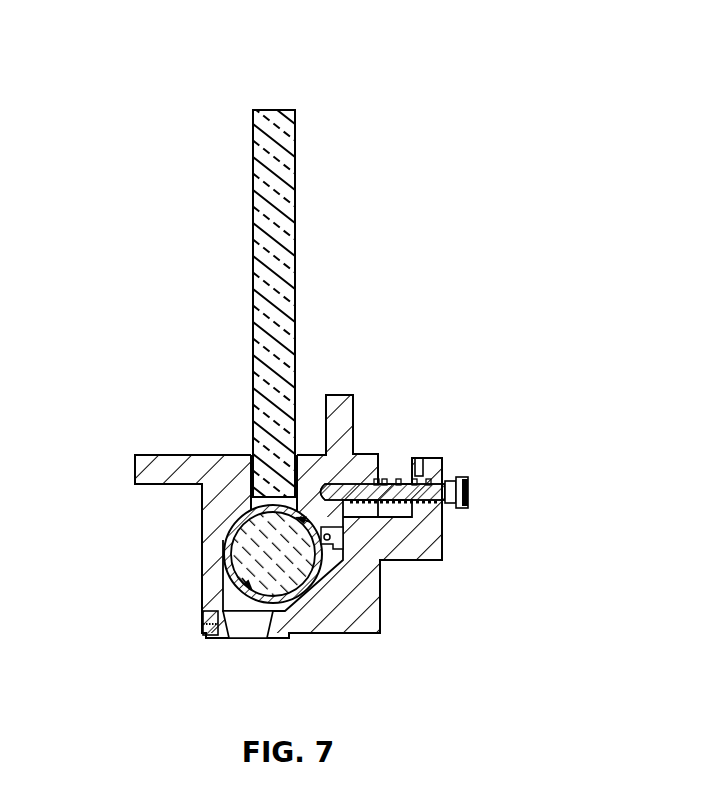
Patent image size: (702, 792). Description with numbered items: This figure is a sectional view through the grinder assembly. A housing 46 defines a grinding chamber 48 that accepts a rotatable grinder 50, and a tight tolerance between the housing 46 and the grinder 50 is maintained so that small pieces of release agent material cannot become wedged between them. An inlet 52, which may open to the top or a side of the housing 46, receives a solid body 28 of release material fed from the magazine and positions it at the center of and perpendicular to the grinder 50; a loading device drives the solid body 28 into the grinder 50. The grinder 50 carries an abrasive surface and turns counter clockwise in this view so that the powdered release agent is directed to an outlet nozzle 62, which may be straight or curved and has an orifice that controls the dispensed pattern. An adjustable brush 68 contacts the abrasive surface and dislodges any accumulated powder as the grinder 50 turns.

The solid body 28 is at (297, 204).
The housing 46 is at (151, 455).
The grinding chamber 48 is at (232, 600).
The grinder 50 is at (252, 515).
The inlet 52 is at (297, 454).
The outlet nozzle 62 is at (280, 634).
The adjustable brush 68 is at (330, 535).